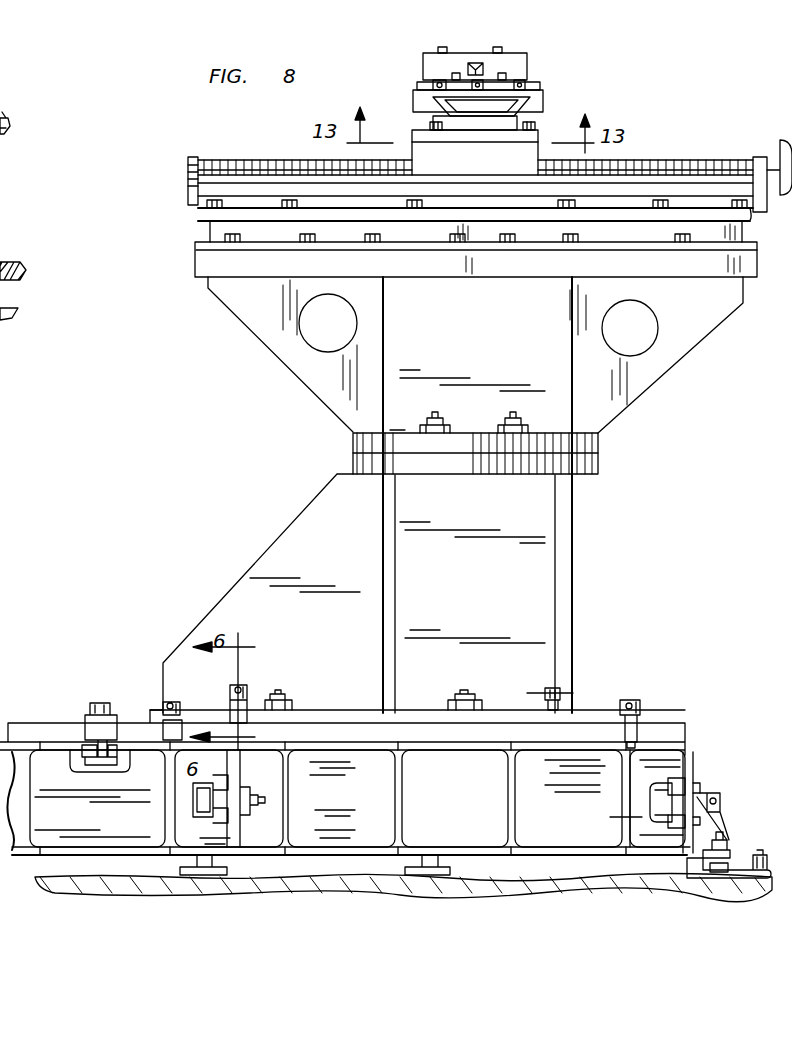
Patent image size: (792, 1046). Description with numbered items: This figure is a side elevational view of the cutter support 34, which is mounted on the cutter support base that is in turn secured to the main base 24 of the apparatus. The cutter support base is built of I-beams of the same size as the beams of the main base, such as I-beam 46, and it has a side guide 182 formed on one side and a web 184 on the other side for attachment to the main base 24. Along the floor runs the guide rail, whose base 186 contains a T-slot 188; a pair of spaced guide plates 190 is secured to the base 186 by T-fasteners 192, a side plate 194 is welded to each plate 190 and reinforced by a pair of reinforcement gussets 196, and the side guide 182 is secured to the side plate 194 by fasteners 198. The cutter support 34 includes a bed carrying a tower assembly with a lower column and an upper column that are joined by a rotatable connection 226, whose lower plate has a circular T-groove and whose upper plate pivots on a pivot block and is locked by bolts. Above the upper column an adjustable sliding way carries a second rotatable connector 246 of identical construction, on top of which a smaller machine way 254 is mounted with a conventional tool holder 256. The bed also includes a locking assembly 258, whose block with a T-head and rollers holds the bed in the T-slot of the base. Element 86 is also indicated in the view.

The main base 24 is at (462, 345).
The cutter support 34 is at (657, 383).
The I-beam 46 is at (0, 107).
The fragment 86 is at (0, 203).
The side guide 182 is at (657, 763).
The web 184 is at (240, 769).
The base 186 is at (740, 875).
The T-slot 188 is at (727, 863).
The guide plates 190 is at (700, 840).
The T-fasteners 192 is at (720, 837).
The side plate 194 is at (687, 782).
The reinforcement gussets 196 is at (650, 822).
The fasteners 198 is at (705, 797).
The rotatable connection 226 is at (348, 444).
The second rotatable connector 246 is at (543, 141).
The machine way 254 is at (410, 107).
The tool holder 256 is at (462, 57).
The locking assembly 258 is at (80, 700).